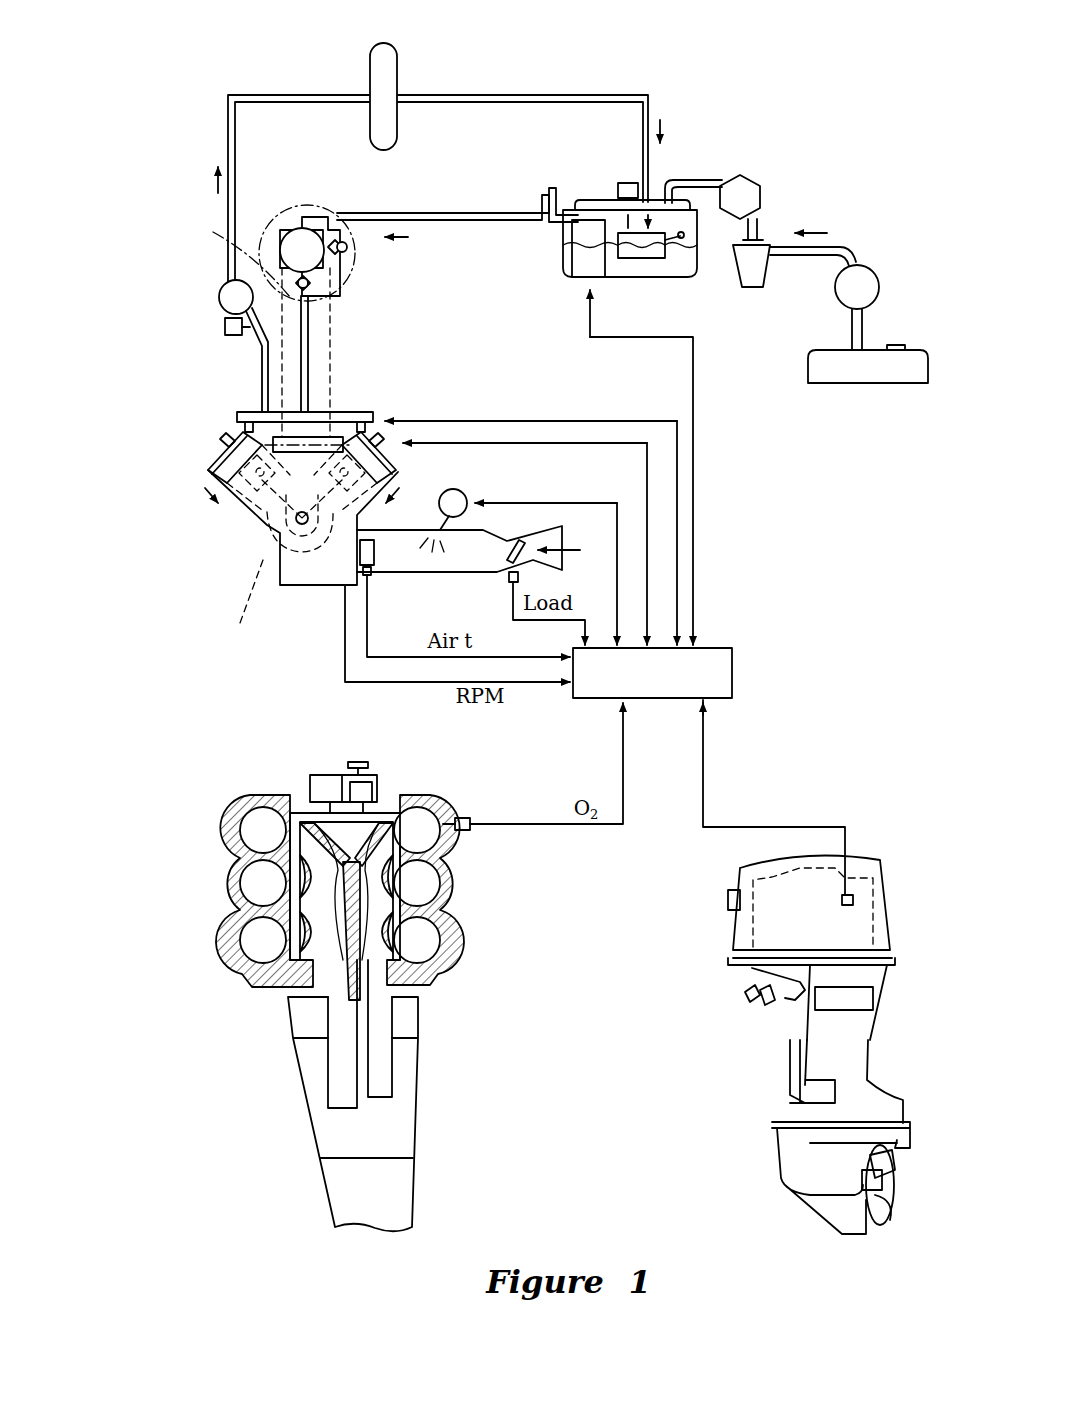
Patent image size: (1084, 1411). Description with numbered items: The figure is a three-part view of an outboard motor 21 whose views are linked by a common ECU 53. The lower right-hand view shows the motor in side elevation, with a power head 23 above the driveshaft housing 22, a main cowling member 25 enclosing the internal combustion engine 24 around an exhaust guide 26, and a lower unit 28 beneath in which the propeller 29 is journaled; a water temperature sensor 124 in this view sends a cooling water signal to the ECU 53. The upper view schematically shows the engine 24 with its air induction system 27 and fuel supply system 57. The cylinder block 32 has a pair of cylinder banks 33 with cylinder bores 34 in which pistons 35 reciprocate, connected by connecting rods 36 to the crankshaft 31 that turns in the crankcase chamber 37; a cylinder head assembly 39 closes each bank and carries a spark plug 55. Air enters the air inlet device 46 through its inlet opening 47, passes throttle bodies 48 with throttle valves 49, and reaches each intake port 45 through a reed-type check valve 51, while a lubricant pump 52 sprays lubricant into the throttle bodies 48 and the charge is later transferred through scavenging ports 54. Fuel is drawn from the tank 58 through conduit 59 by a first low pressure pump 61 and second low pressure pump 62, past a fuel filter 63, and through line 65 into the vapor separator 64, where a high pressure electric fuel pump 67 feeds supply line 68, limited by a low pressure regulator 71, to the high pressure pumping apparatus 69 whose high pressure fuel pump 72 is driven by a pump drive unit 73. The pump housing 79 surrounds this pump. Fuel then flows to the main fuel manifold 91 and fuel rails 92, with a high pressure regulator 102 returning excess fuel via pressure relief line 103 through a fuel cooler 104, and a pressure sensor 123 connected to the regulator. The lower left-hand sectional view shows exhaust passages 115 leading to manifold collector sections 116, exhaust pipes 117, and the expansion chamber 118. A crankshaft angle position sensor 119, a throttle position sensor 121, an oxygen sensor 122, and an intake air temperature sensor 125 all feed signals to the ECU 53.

The outboard motor 21 is at (873, 838).
The driveshaft housing 22 is at (845, 1053).
The power head 23 is at (727, 925).
The internal combustion engine 24 is at (190, 474).
The main cowling member 25 is at (745, 866).
The exhaust guide 26 is at (420, 1017).
The air induction system 27 is at (496, 526).
The lower unit 28 is at (793, 1153).
The propeller 29 is at (885, 1215).
The crankshaft 31 is at (297, 600).
The cylinder block 32 is at (265, 540).
The cylinder banks 33 is at (245, 500).
The cylinder bores 34 is at (233, 897).
The pistons 35 is at (262, 523).
The connecting rods 36 is at (280, 565).
The crankcase chamber 37 is at (290, 583).
The cylinder head assembly 39 is at (215, 452).
The intake port 45 is at (355, 590).
The air silencing and inlet device 46 is at (545, 527).
The air inlet opening 47 is at (565, 548).
The throttle bodies 48 is at (452, 560).
The throttle valve 49 is at (495, 572).
The reed-type check valve 51 is at (400, 556).
The lubricant pump 52 is at (466, 490).
The ECU 53 is at (737, 667).
The scavenging ports 54 is at (448, 837).
The spark plug 55 is at (376, 428).
The fuel supply system 57 is at (765, 106).
The main fuel supply tank 58 is at (883, 395).
The conduit 59 is at (848, 245).
The first low pressure pump 61 is at (872, 270).
The second low pressure pump 62 is at (760, 196).
The fuel filter 63 is at (758, 278).
The vapor separator 64 is at (700, 268).
The line 65 is at (690, 180).
The high pressure electric fuel pump 67 is at (598, 268).
The fuel supply line 68 is at (410, 213).
The high pressure pumping apparatus 69 is at (292, 210).
The low pressure regulator 71 is at (624, 185).
The high pressure fuel pump 72 is at (306, 245).
The pump drive unit 73 is at (373, 785).
The pump housing 79 is at (233, 257).
The main fuel manifold 91 is at (245, 410).
The fuel rails 92 is at (245, 418).
The high pressure regulator 102 is at (222, 290).
The pressure relief line 103 is at (565, 95).
The fuel heat exchanger or cooler 104 is at (397, 70).
The exhaust passage 115 is at (300, 993).
The manifold collector sections 116 is at (337, 933).
The exhaust pipes 117 is at (328, 1073).
The expansion chamber 118 is at (398, 1133).
The crankshaft angle position sensor 119 is at (323, 580).
The throttle position sensor 121 is at (520, 575).
The oxygen sensor 122 is at (470, 820).
The pressure sensor 123 is at (222, 320).
The water temperature sensor 124 is at (856, 900).
The intake air temperature sensor 125 is at (375, 578).